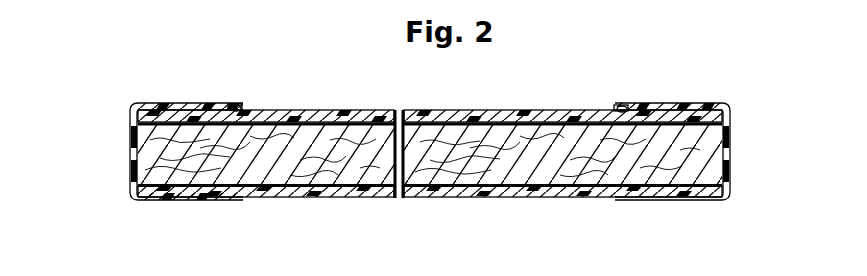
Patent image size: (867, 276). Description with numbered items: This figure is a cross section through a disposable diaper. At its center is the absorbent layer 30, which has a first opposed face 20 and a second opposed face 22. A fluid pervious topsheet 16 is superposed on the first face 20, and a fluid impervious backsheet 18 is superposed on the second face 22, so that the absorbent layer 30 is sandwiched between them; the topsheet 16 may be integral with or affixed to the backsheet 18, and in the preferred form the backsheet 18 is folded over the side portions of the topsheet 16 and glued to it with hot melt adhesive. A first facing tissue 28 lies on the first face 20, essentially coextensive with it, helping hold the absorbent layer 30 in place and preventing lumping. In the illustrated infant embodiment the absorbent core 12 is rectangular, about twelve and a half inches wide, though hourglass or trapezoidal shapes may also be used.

The absorbent core 12 is at (236, 150).
The fluid pervious topsheet 16 is at (341, 111).
The fluid impervious backsheet 18 is at (195, 199).
The first opposed face 20 is at (588, 132).
The second opposed face 22 is at (305, 198).
The first facing tissue 28 is at (499, 112).
The absorbent layer 30 is at (168, 151).